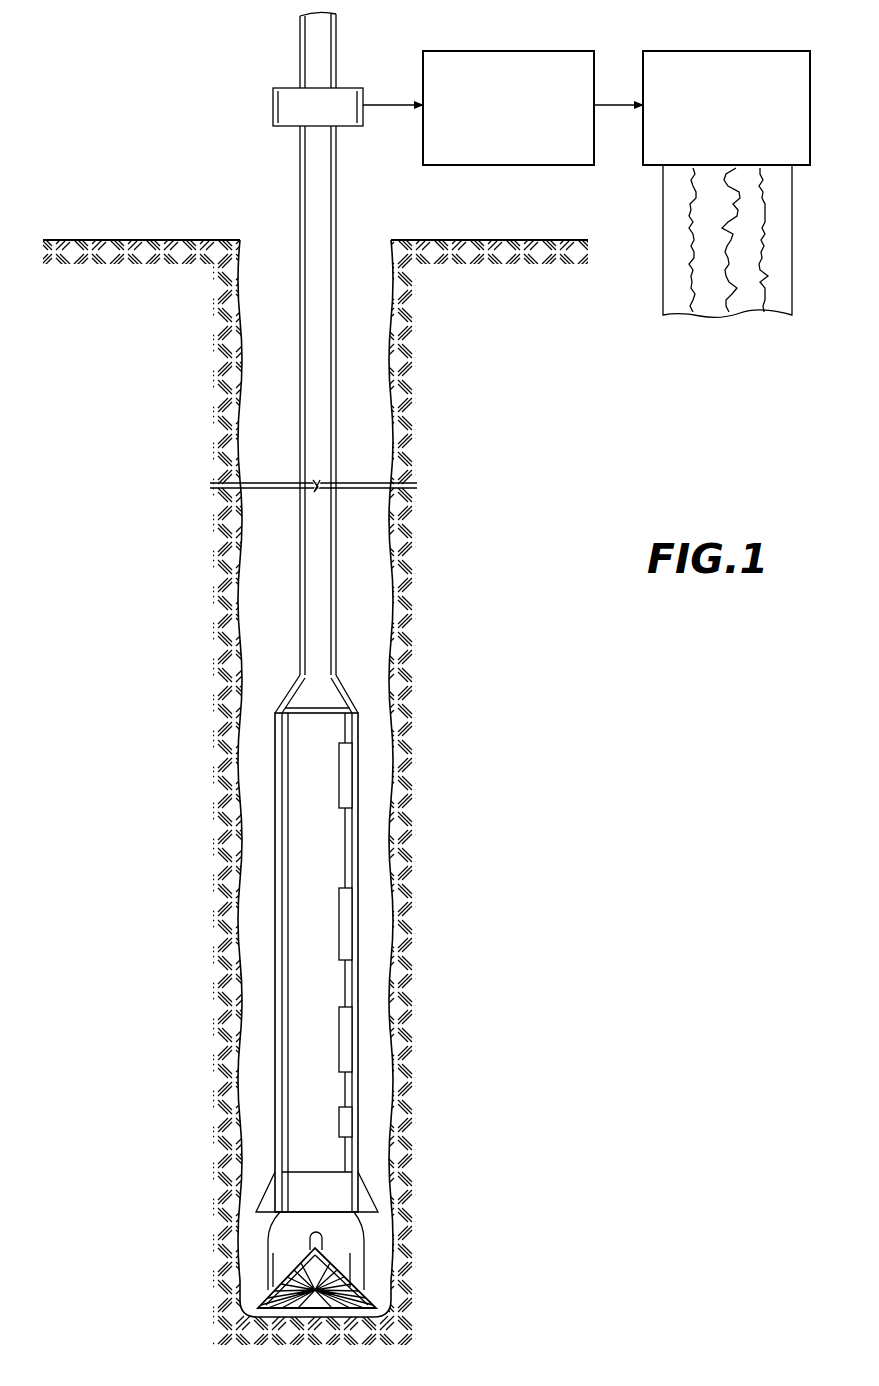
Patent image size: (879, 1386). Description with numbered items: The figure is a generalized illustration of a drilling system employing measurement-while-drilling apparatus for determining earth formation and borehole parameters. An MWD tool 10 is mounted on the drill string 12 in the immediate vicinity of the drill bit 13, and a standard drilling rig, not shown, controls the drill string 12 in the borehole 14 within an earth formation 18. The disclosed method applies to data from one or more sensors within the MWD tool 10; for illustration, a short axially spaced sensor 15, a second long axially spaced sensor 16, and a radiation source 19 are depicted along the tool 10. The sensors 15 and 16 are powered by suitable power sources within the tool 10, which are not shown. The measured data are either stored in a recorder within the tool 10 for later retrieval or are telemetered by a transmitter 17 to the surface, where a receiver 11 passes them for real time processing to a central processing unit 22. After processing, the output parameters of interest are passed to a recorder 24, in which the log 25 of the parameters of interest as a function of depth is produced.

The MWD tool 10 is at (280, 777).
The receiver 11 is at (273, 107).
The drill string 12 is at (300, 360).
The drill bit 13 is at (343, 1280).
The borehole 14 is at (253, 1142).
The short axially spaced sensor 15 is at (348, 1030).
The long axially spaced sensor 16 is at (353, 915).
The transmitter 17 is at (348, 773).
The earth formation 18 is at (189, 868).
The radiation source 19 is at (348, 1118).
The central processing unit 22 is at (510, 50).
The recorder 24 is at (732, 50).
The log 25 is at (663, 297).